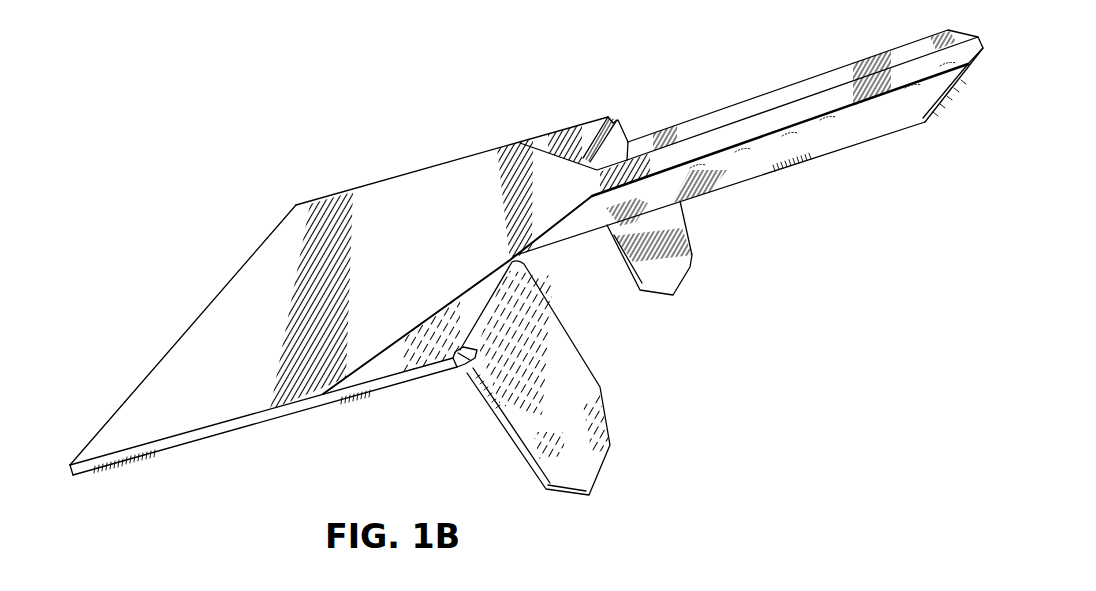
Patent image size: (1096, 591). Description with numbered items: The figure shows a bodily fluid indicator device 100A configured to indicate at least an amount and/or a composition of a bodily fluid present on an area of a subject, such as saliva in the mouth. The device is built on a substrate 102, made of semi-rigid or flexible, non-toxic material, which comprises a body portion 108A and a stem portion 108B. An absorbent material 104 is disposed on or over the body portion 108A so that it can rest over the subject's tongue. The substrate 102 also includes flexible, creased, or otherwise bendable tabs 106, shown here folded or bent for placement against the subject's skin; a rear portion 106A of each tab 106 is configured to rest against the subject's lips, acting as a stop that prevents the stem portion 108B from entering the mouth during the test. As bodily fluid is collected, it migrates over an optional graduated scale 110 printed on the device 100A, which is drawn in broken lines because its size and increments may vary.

The bodily fluid indicator device 100A is at (526, 273).
The substrate 102 is at (93, 467).
The absorbent material 104 is at (238, 373).
The tabs 106 is at (643, 265).
The rear portion 106A is at (503, 428).
The body portion 108A is at (245, 245).
The stem portion 108B is at (729, 193).
The graduated scale 110 is at (890, 68).